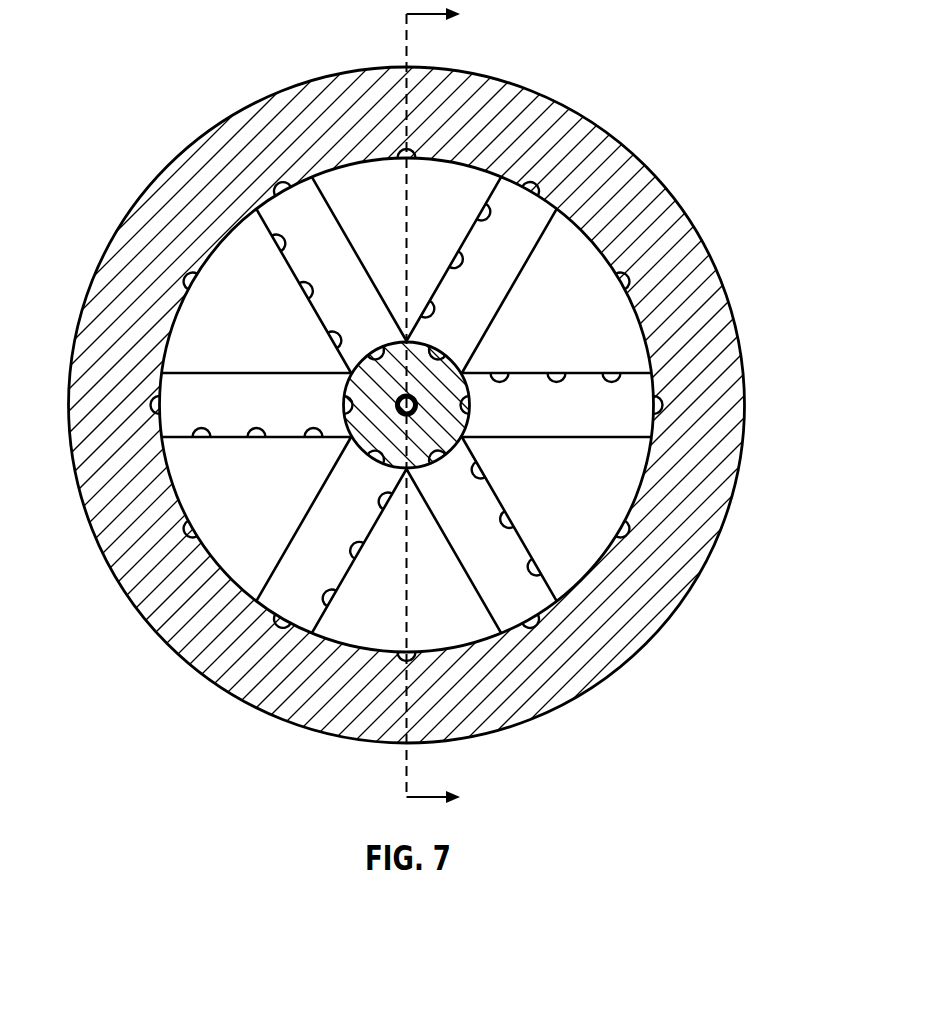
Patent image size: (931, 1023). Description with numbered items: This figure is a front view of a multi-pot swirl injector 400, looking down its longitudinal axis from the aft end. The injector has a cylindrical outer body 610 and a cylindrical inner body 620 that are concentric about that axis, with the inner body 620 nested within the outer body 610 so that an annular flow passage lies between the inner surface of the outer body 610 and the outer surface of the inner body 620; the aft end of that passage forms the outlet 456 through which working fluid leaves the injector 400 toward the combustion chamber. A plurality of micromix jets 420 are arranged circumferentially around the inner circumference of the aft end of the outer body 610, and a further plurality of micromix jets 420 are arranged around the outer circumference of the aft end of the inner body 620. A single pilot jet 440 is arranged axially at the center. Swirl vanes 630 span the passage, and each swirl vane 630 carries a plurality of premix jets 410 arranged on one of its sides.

The multi-pot swirl injector 400 is at (203, 68).
The outer body 610 is at (204, 160).
The outlet 456 is at (233, 285).
The micromix jets 420 is at (534, 183).
The inner body 620 is at (440, 376).
The pilot jet 440 is at (399, 412).
The swirl vane 630 is at (307, 533).
The premix jets 410 is at (386, 503).